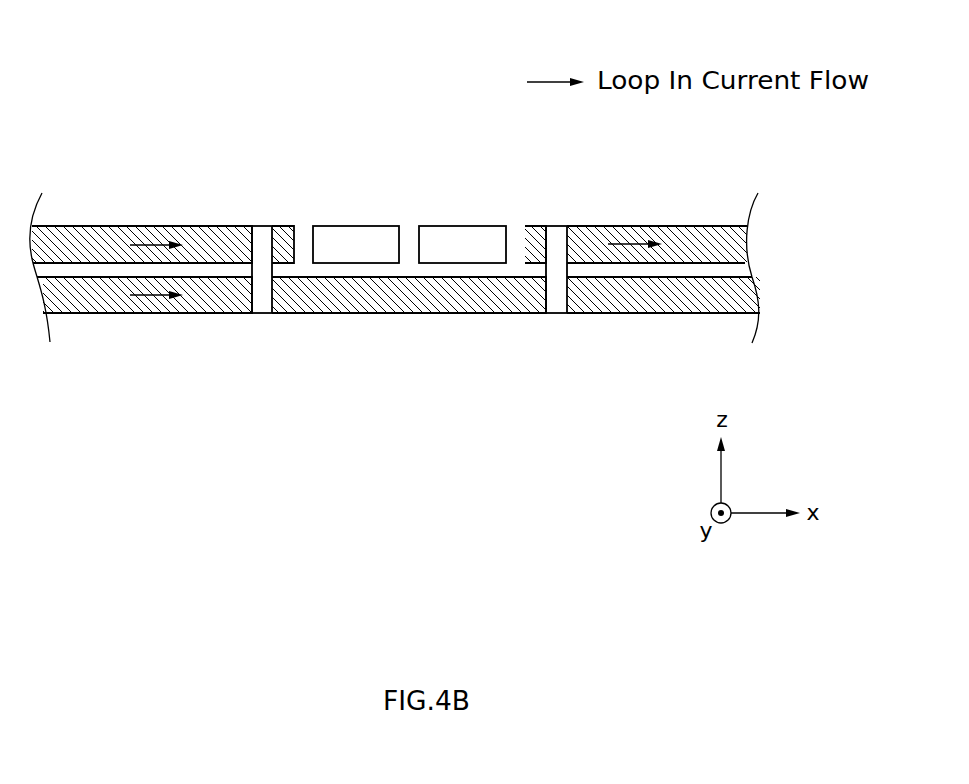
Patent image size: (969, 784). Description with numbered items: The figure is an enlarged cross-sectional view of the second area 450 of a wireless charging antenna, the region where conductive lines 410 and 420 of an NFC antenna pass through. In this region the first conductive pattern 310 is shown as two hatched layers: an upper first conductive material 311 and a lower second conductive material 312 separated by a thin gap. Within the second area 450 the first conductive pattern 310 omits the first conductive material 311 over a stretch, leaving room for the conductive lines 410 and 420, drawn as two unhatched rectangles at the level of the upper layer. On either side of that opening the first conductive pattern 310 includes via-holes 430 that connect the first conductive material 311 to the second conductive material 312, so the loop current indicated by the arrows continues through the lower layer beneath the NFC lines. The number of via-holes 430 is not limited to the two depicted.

The second area 450 is at (387, 90).
The first conductive pattern 310 is at (108, 470).
The first conductive material 311 is at (88, 233).
The second conductive material 312 is at (86, 306).
The via-holes 430 is at (262, 233).
The conductive line 410 is at (357, 234).
The conductive line 420 is at (462, 234).